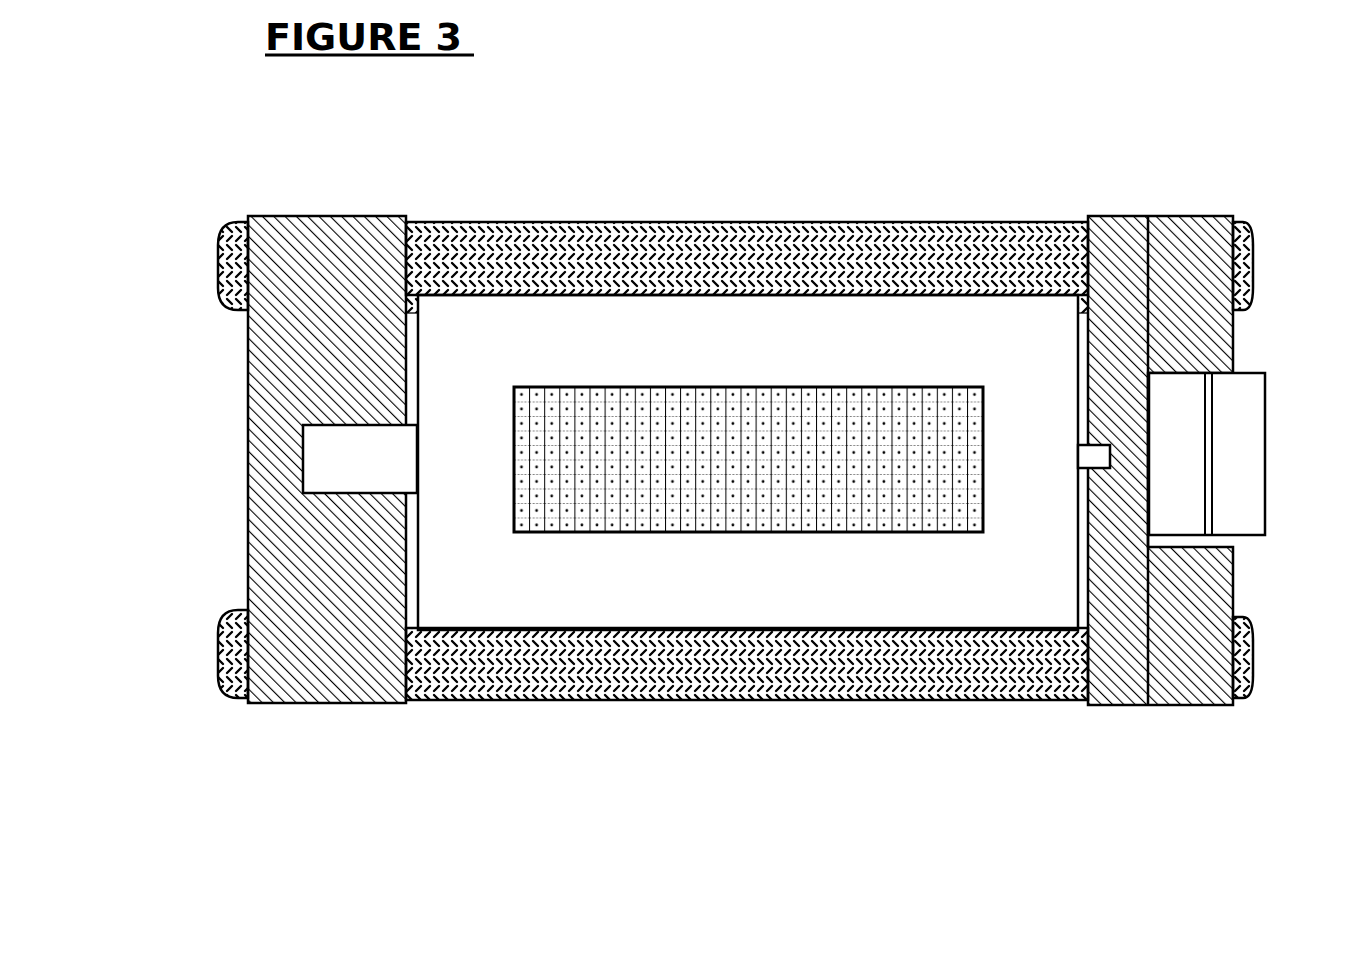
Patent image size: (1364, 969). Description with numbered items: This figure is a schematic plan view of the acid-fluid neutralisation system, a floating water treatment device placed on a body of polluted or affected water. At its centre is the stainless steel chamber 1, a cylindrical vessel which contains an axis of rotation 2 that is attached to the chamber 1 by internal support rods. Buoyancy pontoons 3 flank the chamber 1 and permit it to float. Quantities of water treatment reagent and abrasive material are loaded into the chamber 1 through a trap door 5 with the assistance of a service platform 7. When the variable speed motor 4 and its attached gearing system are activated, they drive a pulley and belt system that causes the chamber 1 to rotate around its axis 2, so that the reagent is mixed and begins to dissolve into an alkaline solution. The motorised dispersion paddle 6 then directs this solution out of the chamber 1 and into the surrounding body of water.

The stainless steel chamber 1 is at (740, 305).
The axis of rotation of chamber 2 is at (1118, 460).
The buoyancy pontoon 3 is at (975, 222).
The variable speed motor 4 is at (305, 430).
The trap door for loading reagents 5 is at (652, 400).
The motorised dispersion paddle 6 is at (1262, 530).
The service platform 7 is at (370, 680).